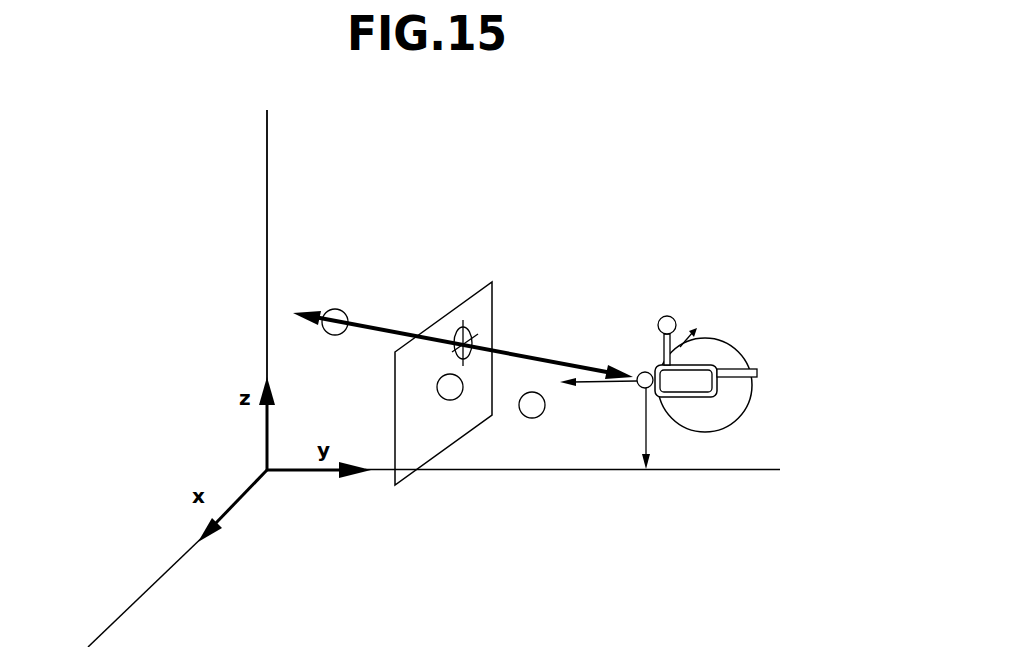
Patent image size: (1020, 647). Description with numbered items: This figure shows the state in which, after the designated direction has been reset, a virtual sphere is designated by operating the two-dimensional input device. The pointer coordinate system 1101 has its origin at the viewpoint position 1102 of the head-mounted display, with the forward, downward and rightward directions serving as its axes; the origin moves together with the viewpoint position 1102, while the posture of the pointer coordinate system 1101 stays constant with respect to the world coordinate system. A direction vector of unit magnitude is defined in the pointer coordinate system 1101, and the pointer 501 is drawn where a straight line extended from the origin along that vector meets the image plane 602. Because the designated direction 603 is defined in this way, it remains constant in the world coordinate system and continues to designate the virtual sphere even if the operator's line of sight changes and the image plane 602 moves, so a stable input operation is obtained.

The pointer 501 is at (473, 330).
The image plane 602 is at (442, 432).
The designated direction 603 is at (380, 323).
The pointer coordinate system 1101 is at (648, 432).
The viewpoint position 1102 is at (640, 373).